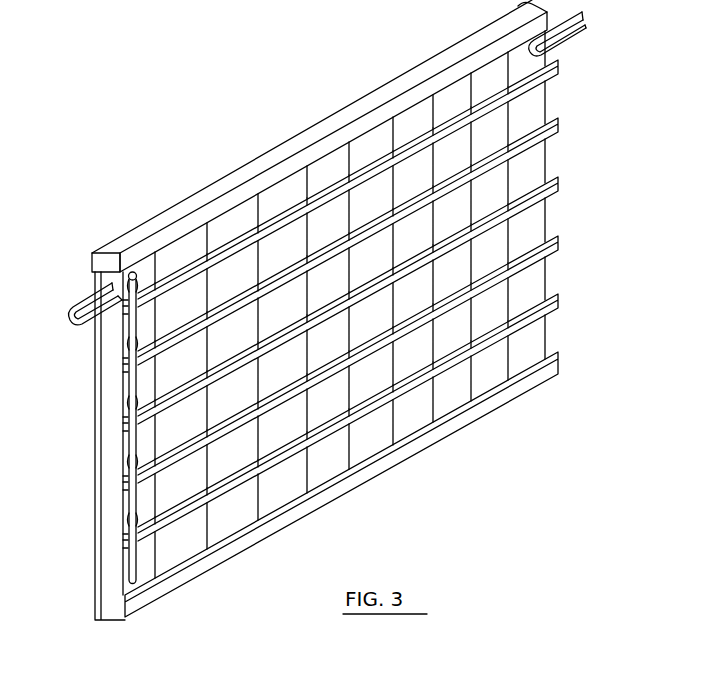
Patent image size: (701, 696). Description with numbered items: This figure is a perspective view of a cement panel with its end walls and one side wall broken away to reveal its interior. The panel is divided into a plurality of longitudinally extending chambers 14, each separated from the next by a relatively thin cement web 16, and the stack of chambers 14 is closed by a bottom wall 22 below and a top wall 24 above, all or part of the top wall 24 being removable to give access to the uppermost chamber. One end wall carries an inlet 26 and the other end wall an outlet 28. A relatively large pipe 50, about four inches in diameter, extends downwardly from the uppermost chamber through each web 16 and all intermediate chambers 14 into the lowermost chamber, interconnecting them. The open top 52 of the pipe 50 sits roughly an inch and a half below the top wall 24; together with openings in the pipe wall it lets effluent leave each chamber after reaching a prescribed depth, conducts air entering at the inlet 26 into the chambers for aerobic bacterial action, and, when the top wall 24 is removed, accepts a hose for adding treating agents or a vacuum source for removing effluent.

The chambers 14 is at (546, 97).
The cement web 16 is at (546, 190).
The bottom wall 22 is at (423, 442).
The top wall 24 is at (498, 22).
The inlet 26 is at (86, 288).
The outlet 28 is at (582, 20).
The pipe 50 is at (134, 274).
The open top 52 is at (131, 272).